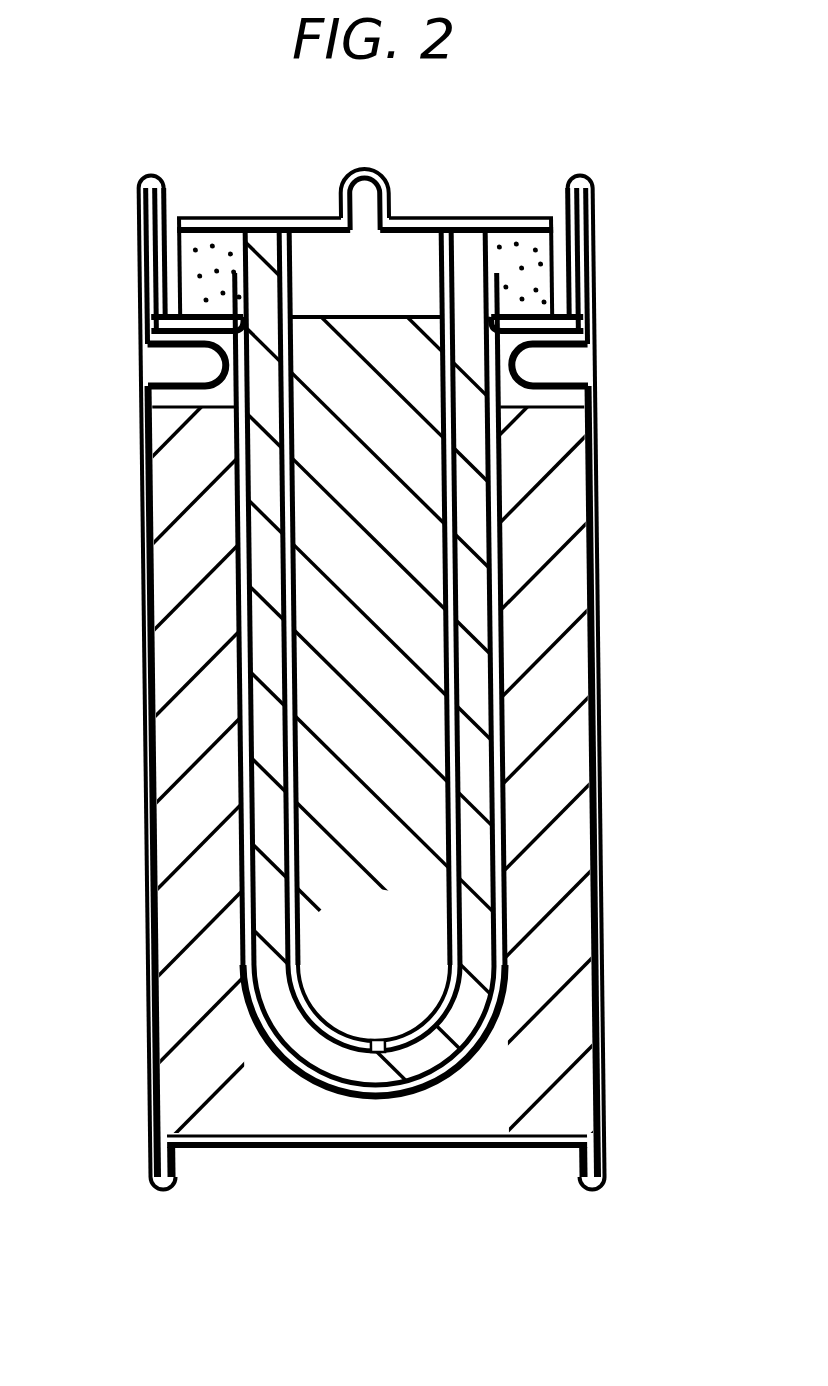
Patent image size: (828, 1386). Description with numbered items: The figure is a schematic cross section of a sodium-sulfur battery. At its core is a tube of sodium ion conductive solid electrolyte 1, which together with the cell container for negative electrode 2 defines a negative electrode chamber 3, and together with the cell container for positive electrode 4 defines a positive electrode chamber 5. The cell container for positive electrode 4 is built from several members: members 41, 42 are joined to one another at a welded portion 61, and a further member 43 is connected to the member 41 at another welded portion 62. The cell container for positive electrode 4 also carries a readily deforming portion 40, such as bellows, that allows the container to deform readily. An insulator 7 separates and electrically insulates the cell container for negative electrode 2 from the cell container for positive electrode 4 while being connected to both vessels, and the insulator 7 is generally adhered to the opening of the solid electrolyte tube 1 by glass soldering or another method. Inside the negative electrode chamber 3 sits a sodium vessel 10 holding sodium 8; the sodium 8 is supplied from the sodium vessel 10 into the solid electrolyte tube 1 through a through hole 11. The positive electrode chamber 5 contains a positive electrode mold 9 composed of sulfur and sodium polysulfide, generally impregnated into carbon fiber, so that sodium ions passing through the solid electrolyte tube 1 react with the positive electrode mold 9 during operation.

The tube of sodium ion conductive solid electrolyte 1 is at (500, 582).
The cell container for negative electrode 2 is at (405, 218).
The negative electrode chamber 3 is at (328, 242).
The cell container for positive electrode 4 is at (596, 464).
The positive electrode chamber 5 is at (228, 396).
The insulator 7 is at (541, 283).
The sodium 8 is at (300, 588).
The positive electrode mold 9 is at (574, 623).
The sodium vessel 10 is at (287, 755).
The through hole 11 is at (388, 1040).
The readily deforming portion 40 is at (588, 391).
The member of the cell container for positive electrode 41 is at (596, 750).
The member of the cell container for positive electrode 42 is at (586, 344).
The member of the cell container for positive electrode 43 is at (457, 1147).
The welded portion 61 is at (589, 180).
The welded portion 62 is at (596, 1188).